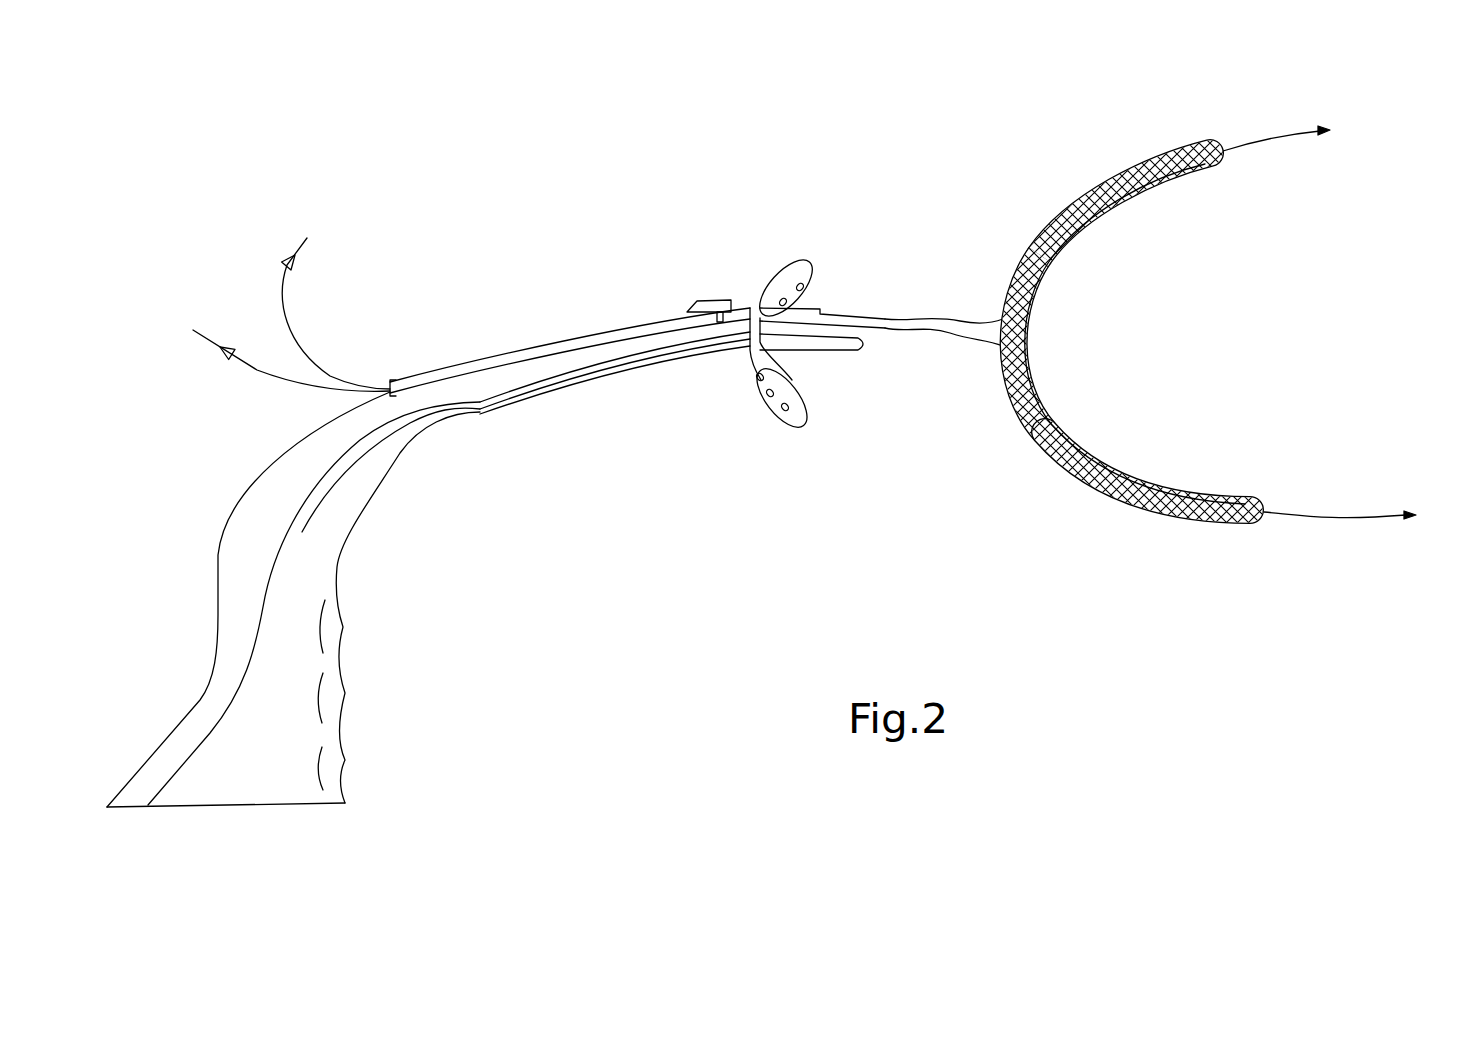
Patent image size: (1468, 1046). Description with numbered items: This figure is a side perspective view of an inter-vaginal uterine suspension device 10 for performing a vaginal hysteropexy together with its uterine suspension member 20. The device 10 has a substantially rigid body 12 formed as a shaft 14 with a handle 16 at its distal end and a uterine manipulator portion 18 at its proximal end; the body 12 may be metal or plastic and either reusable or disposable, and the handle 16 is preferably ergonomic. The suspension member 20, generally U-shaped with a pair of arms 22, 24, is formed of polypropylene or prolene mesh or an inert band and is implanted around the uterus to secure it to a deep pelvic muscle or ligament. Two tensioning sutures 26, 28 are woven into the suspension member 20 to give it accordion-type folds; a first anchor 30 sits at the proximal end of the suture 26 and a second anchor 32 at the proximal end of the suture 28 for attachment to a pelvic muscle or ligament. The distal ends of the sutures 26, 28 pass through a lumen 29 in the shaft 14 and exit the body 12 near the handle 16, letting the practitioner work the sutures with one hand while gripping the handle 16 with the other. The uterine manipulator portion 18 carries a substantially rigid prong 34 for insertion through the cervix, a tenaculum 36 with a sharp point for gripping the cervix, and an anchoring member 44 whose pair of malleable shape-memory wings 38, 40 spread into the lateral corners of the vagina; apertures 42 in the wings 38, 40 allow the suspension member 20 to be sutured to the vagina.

The inter-vaginal uterine suspension device 10 is at (578, 530).
The substantially rigid body 12 is at (506, 346).
The shaft 14 is at (520, 374).
The handle 16 is at (308, 707).
The uterine manipulator portion 18 is at (850, 294).
The suspension member 20 is at (1143, 331).
The arm 22 is at (1160, 186).
The arm 24 is at (1210, 496).
The tensioning suture 26 is at (283, 304).
The tensioning suture 28 is at (258, 372).
The lumen 29 is at (366, 394).
The first anchor 30 is at (1295, 132).
The second anchor 32 is at (1357, 509).
The substantially rigid prong 34 is at (853, 350).
The tenaculum 36 is at (817, 307).
The wing 38 is at (783, 277).
The wing 40 is at (752, 332).
The apertures 42 is at (757, 380).
The anchoring member 44 is at (753, 287).